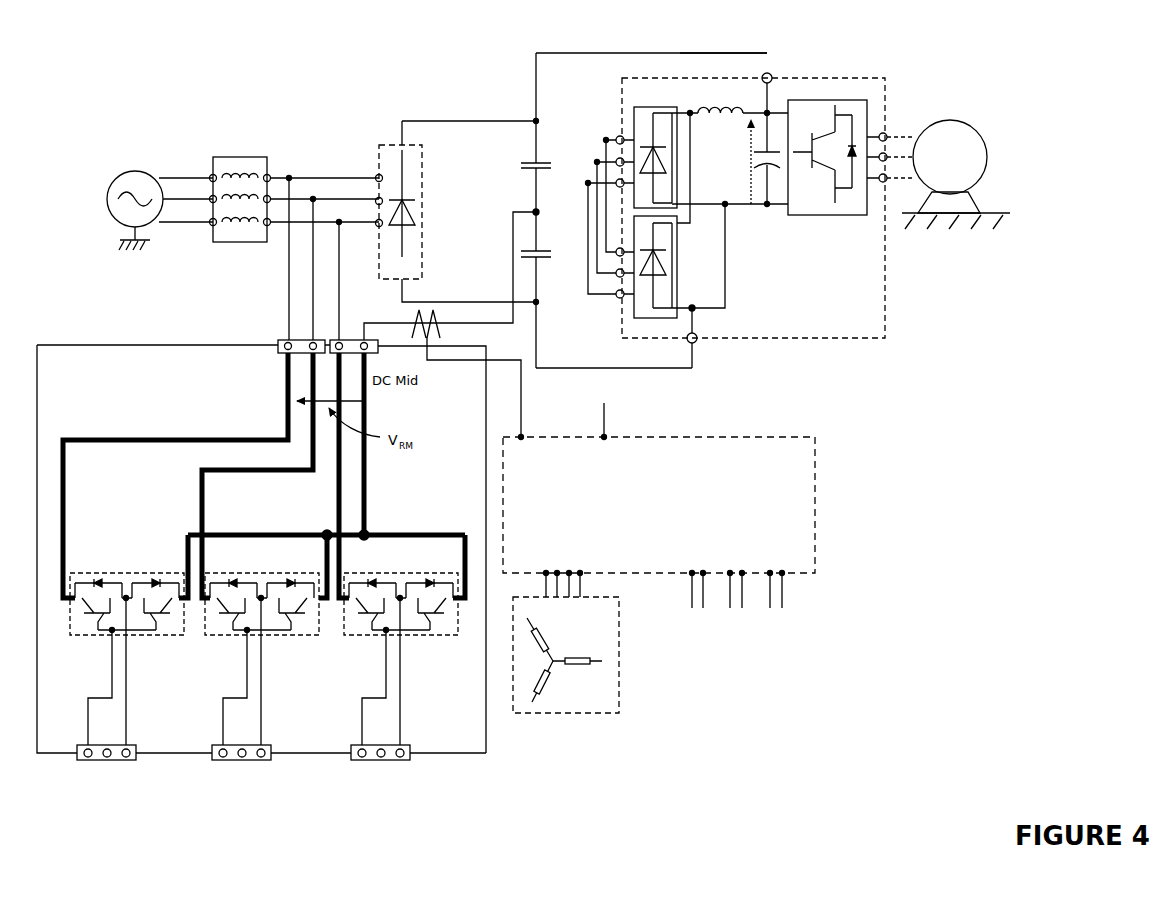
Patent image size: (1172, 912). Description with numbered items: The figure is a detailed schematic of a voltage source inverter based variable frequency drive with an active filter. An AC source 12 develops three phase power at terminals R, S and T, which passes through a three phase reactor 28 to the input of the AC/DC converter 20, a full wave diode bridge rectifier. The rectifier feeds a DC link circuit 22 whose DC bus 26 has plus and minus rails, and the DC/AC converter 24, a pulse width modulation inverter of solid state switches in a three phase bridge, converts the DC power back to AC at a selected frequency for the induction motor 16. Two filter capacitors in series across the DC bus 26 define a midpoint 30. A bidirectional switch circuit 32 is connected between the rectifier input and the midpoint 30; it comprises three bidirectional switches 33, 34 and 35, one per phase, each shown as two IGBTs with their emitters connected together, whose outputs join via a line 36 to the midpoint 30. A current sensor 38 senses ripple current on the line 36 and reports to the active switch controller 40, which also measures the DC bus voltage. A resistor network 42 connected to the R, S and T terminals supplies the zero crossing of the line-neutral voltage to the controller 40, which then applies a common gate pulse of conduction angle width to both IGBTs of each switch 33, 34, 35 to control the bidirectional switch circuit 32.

The AC source 12 is at (136, 166).
The three phase reactor 28 is at (257, 146).
The AC/DC converter 20 is at (371, 161).
The DC link circuit 22 is at (619, 51).
The DC bus 26 is at (710, 52).
The DC/AC converter 24 is at (819, 75).
The motor 16 is at (945, 111).
The midpoint 30 is at (531, 208).
The line 36 is at (509, 252).
The current sensor 38 is at (410, 315).
The active switch controller 40 is at (710, 430).
The resistor network 42 is at (633, 683).
The bidirectional switch 33 is at (77, 569).
The bidirectional switch 34 is at (262, 631).
The bidirectional switch 35 is at (401, 632).
The bidirectional switch circuit 32 is at (303, 758).